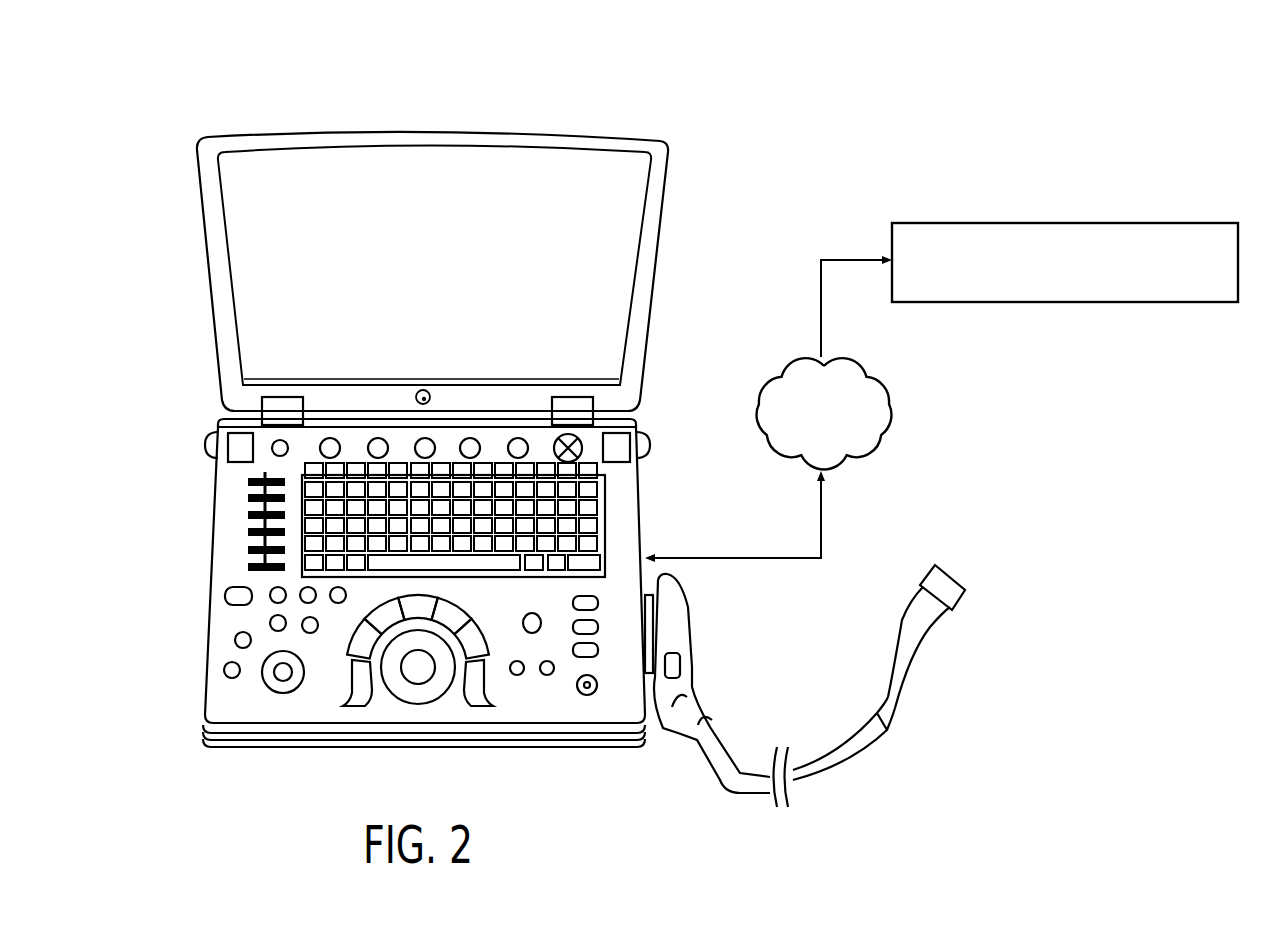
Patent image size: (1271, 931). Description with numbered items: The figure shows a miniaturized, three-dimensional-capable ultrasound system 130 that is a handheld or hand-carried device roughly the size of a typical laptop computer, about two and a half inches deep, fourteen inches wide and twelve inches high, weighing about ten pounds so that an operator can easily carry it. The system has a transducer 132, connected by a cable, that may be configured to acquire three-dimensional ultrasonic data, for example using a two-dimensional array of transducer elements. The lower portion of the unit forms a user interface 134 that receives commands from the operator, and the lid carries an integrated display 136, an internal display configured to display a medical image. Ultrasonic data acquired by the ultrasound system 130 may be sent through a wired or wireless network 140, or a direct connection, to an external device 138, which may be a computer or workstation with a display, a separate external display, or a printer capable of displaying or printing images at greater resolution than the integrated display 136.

The miniaturized ultrasound system 130 is at (176, 106).
The transducer 132 is at (799, 794).
The user interface 134 is at (202, 457).
The integrated display 136 is at (187, 138).
The external device 138 is at (1065, 222).
The network 140 is at (767, 362).